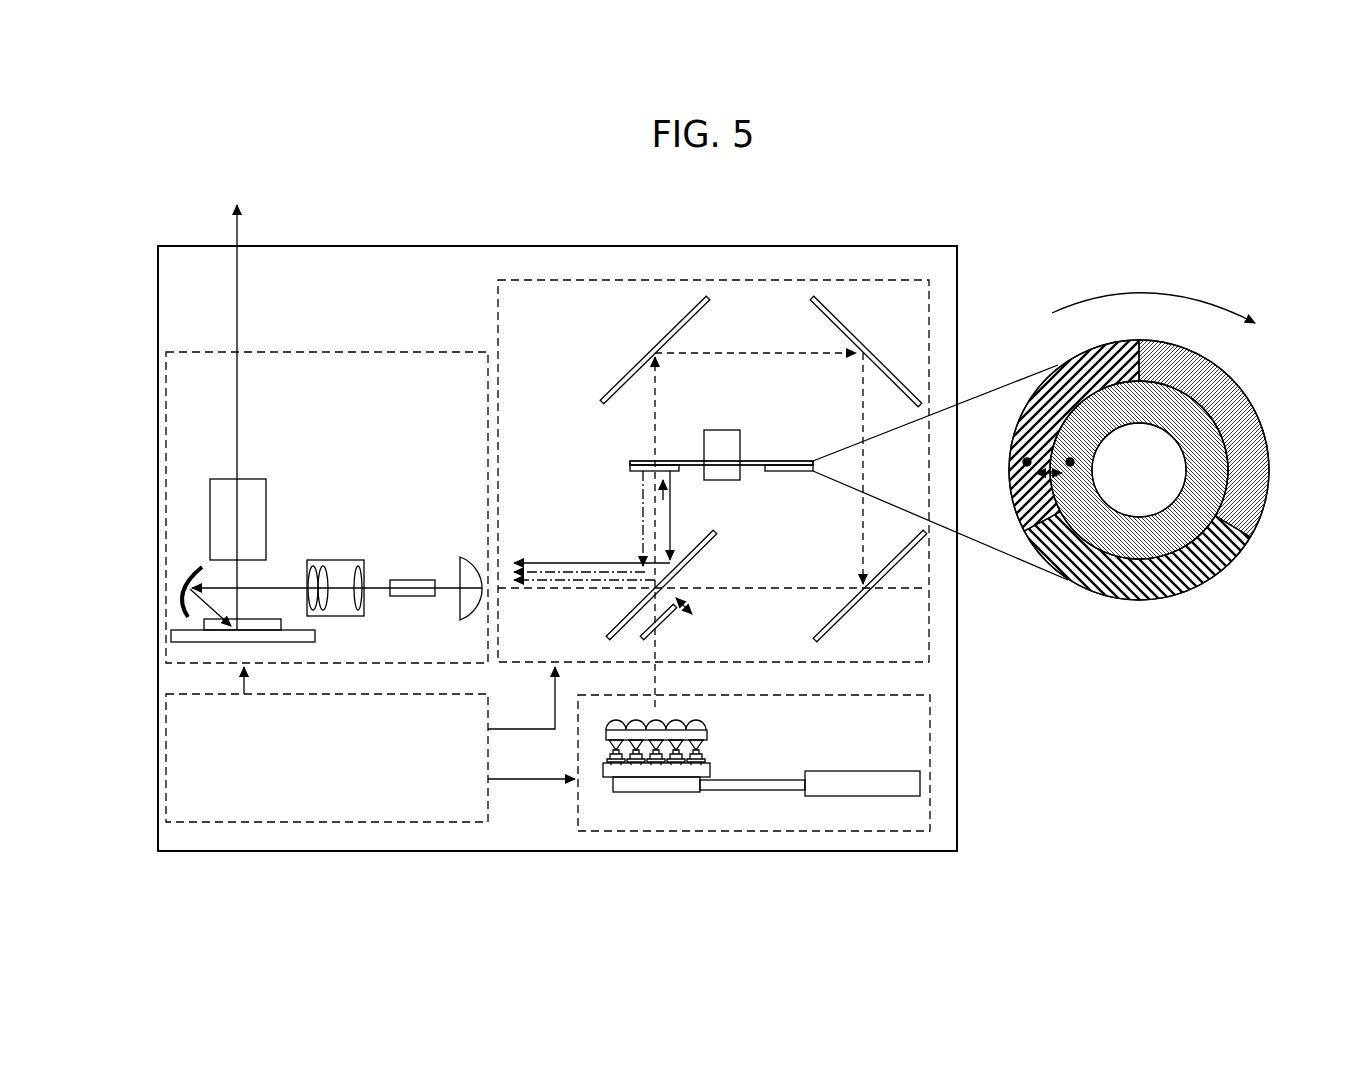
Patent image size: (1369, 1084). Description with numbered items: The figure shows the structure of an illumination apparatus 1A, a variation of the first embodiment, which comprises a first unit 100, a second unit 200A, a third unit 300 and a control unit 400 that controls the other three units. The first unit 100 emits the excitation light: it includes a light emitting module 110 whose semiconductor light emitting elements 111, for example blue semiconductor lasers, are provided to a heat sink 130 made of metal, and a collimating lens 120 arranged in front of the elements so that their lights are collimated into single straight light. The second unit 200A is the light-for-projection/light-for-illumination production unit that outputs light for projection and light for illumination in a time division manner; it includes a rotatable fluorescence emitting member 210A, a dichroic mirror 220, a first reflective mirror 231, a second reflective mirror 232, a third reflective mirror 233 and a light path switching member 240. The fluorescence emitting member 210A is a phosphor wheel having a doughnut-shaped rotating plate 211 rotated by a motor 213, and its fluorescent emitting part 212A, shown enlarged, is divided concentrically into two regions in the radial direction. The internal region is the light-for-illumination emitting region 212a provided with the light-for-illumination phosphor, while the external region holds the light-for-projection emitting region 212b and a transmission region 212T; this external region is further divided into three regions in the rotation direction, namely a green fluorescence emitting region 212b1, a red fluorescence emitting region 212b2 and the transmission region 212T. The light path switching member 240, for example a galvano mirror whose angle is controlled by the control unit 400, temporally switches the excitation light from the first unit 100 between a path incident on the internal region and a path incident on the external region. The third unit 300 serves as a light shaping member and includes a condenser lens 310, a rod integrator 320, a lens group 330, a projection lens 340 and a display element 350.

The illumination apparatus 1A is at (872, 246).
The first unit 100 is at (930, 756).
The light emitting module 110 is at (714, 748).
The semiconductor light emitting elements 111 is at (712, 758).
The collimating lens 120 is at (700, 724).
The heat sink 130 is at (612, 790).
The second unit 200A is at (930, 299).
The fluorescence emitting member 210A is at (632, 460).
The rotating plate 211 is at (763, 461).
The fluorescent emitting part 212A is at (632, 470).
The light-for-illumination emitting region 212a is at (1213, 478).
The light-for-projection emitting region 212b is at (1265, 222).
The green fluorescence emitting region 212b1 is at (1058, 350).
The red fluorescence emitting region 212b2 is at (1185, 348).
The transmission region 212T is at (1137, 600).
The motor 213 is at (722, 430).
The dichroic mirror 220 is at (612, 632).
The first reflective mirror 231 is at (631, 373).
The second reflective mirror 232 is at (856, 345).
The third reflective mirror 233 is at (847, 620).
The light path switching member 240 is at (665, 614).
The third unit 300 is at (166, 437).
The condenser lens 310 is at (461, 557).
The rod integrator 320 is at (412, 580).
The lens group 330 is at (336, 560).
The projection lens 340 is at (256, 479).
The display element 350 is at (183, 617).
The control unit 400 is at (166, 757).